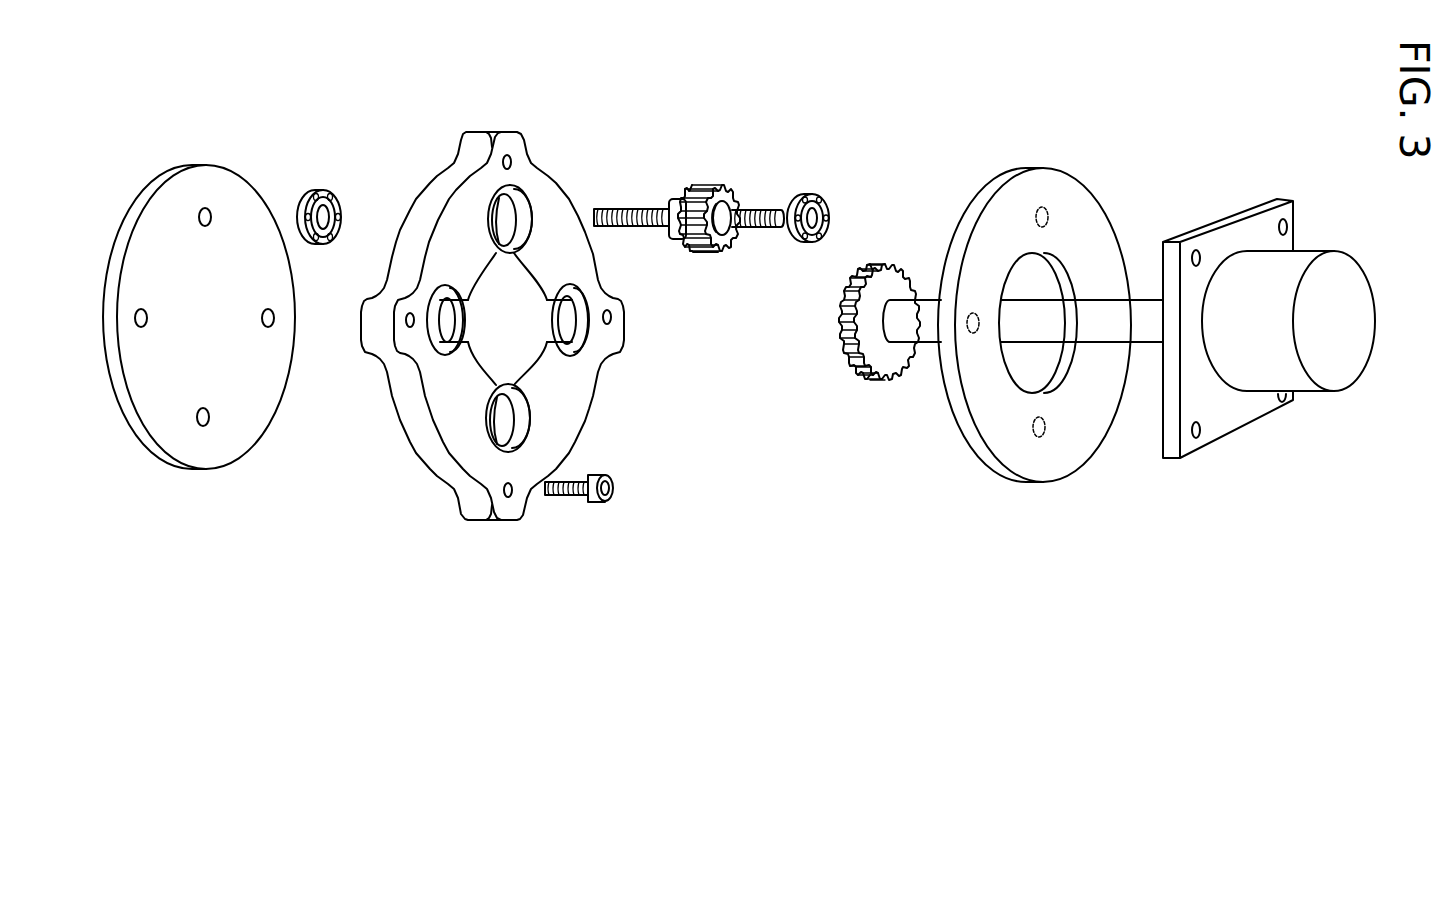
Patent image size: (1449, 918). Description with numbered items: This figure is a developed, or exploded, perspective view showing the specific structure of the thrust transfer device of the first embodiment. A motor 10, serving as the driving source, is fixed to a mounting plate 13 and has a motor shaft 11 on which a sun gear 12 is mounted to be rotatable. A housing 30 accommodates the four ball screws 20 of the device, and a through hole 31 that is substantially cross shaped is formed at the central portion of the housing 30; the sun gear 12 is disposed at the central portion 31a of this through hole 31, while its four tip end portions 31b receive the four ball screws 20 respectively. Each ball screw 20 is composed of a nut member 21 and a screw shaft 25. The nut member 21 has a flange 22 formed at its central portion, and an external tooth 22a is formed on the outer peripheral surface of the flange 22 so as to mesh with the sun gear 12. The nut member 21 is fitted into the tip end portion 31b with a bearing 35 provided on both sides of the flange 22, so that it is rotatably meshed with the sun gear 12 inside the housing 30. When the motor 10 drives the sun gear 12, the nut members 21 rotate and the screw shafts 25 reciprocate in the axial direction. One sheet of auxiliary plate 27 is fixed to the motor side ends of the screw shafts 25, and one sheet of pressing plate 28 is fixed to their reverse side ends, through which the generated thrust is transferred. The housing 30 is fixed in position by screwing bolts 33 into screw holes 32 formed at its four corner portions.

The motor 10 is at (1302, 380).
The motor shaft 11 is at (1142, 315).
The sun gear 12 is at (887, 363).
The mounting plate 13 is at (1227, 437).
The ball screw 20 is at (686, 199).
The nut member 21 is at (727, 231).
The flange 22 is at (726, 256).
The external tooth 22a is at (698, 254).
The screw shaft 25 is at (588, 210).
The auxiliary plate 27 is at (1030, 167).
The pressing plate 28 is at (188, 156).
The housing 30 is at (547, 175).
The through hole 31 is at (517, 336).
The central portion 31a is at (481, 322).
The tip end portion 31b is at (500, 215).
The screw hole 32 is at (509, 160).
The bolt 33 is at (580, 494).
The bearing 35 is at (302, 190).